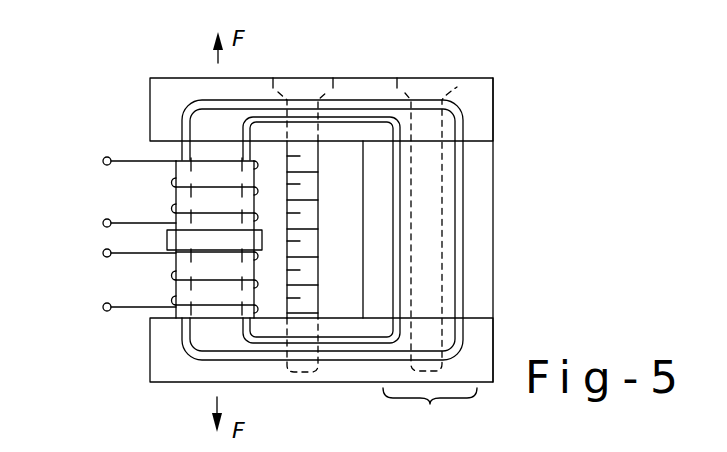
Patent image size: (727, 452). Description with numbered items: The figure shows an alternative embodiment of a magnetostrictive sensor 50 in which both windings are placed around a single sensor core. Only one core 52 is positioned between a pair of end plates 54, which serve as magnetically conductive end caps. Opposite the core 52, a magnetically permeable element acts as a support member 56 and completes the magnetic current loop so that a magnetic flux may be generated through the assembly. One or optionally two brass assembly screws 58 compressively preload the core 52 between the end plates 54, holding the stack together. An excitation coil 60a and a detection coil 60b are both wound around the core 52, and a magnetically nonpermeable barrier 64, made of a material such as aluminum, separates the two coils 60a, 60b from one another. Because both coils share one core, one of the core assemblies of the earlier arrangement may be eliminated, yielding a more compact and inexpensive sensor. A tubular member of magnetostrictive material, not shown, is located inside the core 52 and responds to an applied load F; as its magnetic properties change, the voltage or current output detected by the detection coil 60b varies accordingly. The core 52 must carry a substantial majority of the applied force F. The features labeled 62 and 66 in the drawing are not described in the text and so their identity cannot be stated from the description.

The magnetostrictive sensor 50 is at (320, 232).
The core 52 is at (198, 151).
The end plates 54 is at (168, 97).
The support member 56 is at (475, 287).
The brass assembly screws 58 is at (430, 90).
The excitation coil 60a is at (103, 164).
The detection coil 60b is at (103, 311).
The coil 62 is at (176, 287).
The magnetically nonpermeable barrier 64 is at (167, 240).
The lamination stack width 66 is at (430, 412).